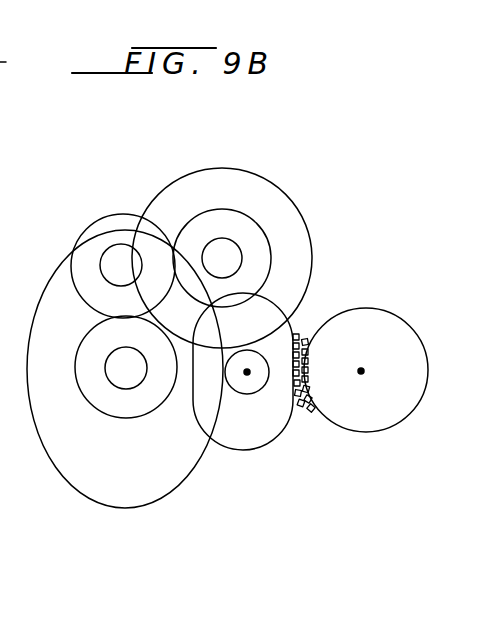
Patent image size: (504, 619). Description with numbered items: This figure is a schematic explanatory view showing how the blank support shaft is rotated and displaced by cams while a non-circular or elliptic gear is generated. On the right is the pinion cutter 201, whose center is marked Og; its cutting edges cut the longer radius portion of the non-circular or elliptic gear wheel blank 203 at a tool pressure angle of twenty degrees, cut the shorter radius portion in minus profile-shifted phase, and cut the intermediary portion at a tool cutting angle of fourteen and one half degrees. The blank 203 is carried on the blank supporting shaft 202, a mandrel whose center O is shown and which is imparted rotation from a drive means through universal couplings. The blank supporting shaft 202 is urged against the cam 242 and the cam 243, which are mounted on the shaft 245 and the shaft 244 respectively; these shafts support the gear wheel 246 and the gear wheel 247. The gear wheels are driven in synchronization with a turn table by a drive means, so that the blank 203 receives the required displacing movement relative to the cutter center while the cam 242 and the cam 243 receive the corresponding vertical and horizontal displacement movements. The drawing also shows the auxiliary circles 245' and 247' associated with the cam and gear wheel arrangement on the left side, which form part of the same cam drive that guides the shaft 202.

The pinion cutter 201 is at (310, 410).
The blank supporting shaft 202 is at (250, 395).
The gear wheel blank 203 is at (235, 450).
The cam 242 is at (193, 173).
The cam 243 is at (52, 272).
The shaft 244 is at (110, 377).
The shaft 245 is at (276, 240).
The upper-left inner circle 245' is at (89, 220).
The gear wheel 246 is at (228, 208).
The gear wheel 247 is at (142, 428).
The upper-left outer circle 247' is at (103, 253).